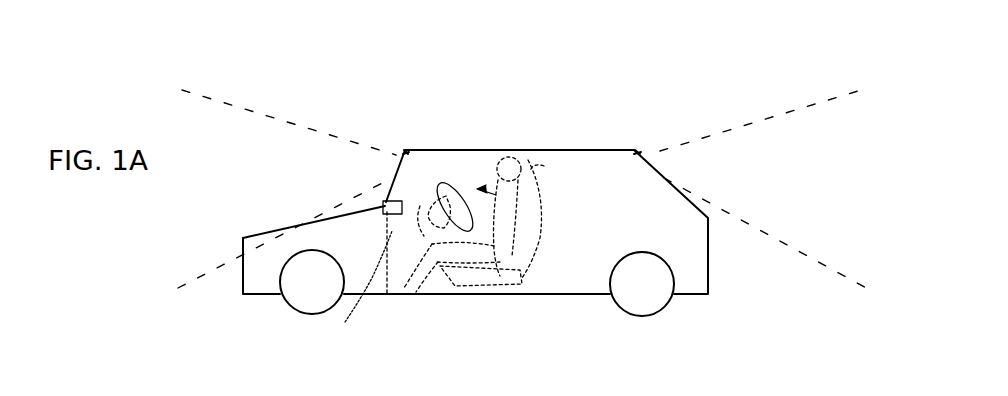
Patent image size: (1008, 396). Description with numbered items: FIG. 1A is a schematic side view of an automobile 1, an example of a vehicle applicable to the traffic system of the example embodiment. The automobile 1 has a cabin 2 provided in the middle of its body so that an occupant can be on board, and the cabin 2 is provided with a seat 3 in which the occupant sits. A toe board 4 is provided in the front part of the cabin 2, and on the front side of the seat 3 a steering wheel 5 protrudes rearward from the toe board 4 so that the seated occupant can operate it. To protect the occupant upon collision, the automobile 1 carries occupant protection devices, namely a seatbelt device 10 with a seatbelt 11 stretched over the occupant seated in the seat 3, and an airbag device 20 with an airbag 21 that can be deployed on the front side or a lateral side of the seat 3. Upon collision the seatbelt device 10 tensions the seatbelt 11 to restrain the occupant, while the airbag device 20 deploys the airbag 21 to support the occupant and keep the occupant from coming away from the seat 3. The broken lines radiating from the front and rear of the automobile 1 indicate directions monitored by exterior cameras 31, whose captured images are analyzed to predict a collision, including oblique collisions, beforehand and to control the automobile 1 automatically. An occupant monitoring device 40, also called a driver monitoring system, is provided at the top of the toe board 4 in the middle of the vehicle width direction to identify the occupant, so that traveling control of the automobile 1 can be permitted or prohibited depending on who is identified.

The automobile 1 is at (290, 146).
The cabin 2 is at (586, 172).
The seat 3 is at (473, 272).
The toe board 4 is at (360, 279).
The steering wheel 5 is at (437, 181).
The seatbelt device 10 is at (462, 224).
The seatbelt 11 is at (543, 165).
The airbag device 20 is at (434, 216).
The airbag 21 is at (446, 190).
The exterior camera 31 is at (405, 150).
The occupant monitoring device 40 is at (383, 204).